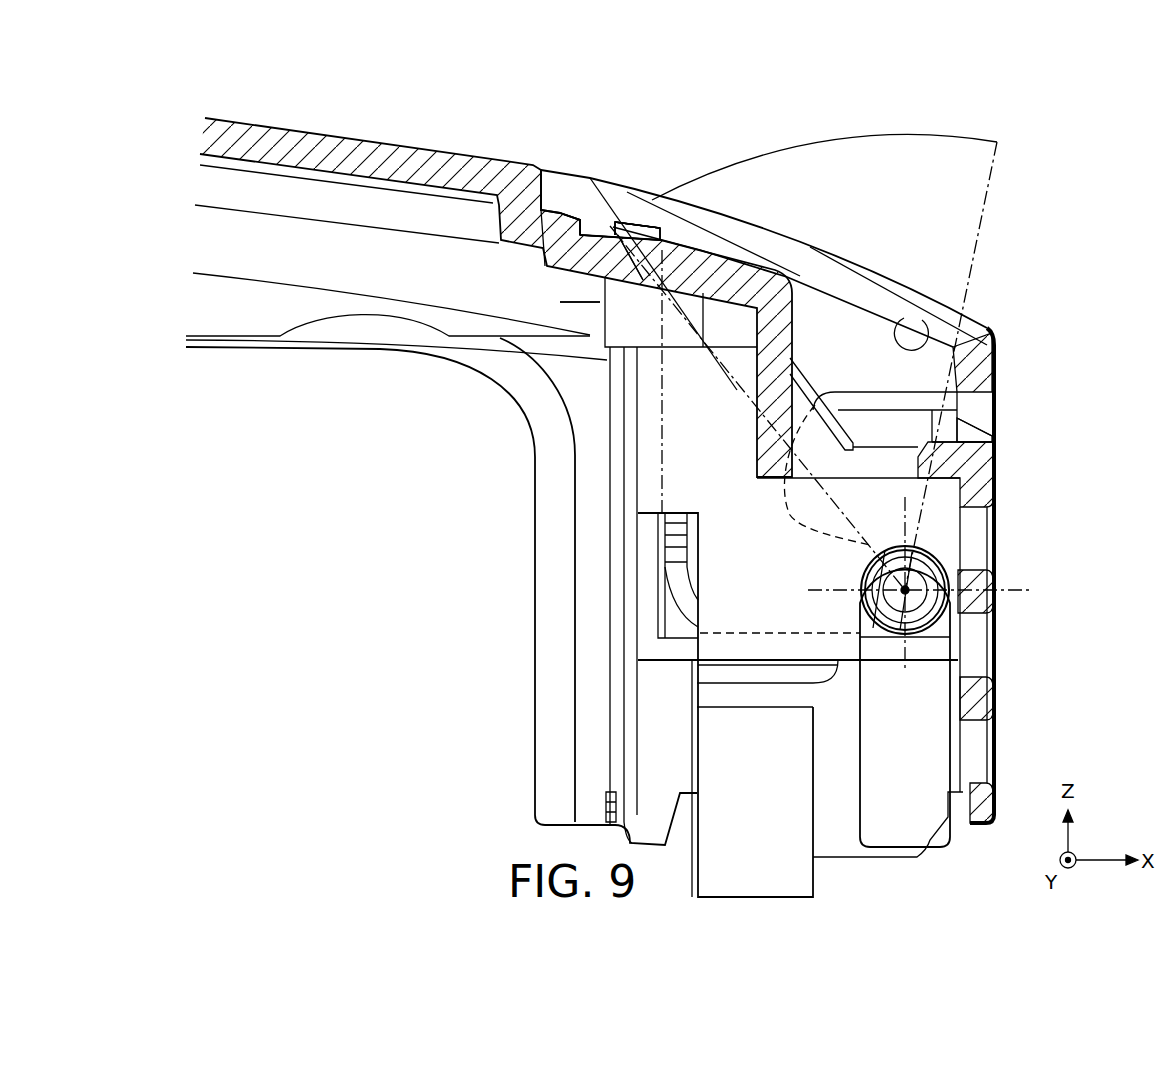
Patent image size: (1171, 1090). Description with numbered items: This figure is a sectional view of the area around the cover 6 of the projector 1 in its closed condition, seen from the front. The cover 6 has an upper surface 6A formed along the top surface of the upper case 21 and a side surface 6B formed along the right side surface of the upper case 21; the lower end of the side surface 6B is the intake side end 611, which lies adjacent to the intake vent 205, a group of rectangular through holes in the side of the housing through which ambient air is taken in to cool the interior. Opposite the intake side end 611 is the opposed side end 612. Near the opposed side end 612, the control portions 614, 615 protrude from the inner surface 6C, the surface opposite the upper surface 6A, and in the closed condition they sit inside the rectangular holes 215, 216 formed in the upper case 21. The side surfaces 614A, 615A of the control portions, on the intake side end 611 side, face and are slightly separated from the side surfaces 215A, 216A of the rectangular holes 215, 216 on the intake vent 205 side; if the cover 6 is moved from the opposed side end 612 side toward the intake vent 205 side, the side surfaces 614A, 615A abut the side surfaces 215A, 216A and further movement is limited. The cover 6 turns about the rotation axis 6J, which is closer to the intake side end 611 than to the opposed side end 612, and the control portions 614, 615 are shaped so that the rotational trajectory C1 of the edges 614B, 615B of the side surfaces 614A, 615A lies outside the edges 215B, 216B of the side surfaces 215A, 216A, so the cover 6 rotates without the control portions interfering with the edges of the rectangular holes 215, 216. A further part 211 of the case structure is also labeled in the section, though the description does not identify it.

The projector 1 is at (815, 98).
The upper case 21 is at (338, 130).
The cover 6 is at (1000, 345).
The upper surface 6A is at (865, 262).
The side surface 6B is at (1000, 398).
The inner surface 6C is at (927, 316).
The rotation axis 6J is at (957, 620).
The intake side end 611 is at (994, 441).
The opposed side end 612 is at (533, 167).
The intake vent 205 is at (973, 508).
The boss 211 is at (916, 465).
The rectangular hole 215 is at (577, 210).
The rectangular hole 216 is at (543, 153).
The side surface 215A is at (618, 235).
The side surface 216A is at (683, 341).
The edge 215B is at (624, 228).
The edge 216B is at (657, 168).
The control portion 614 is at (606, 230).
The control portion 615 is at (616, 162).
The side surface 614A is at (620, 225).
The side surface 615A is at (637, 184).
The edge 614B is at (585, 302).
The edge 615B is at (490, 372).
The rotational trajectory C1 is at (955, 140).